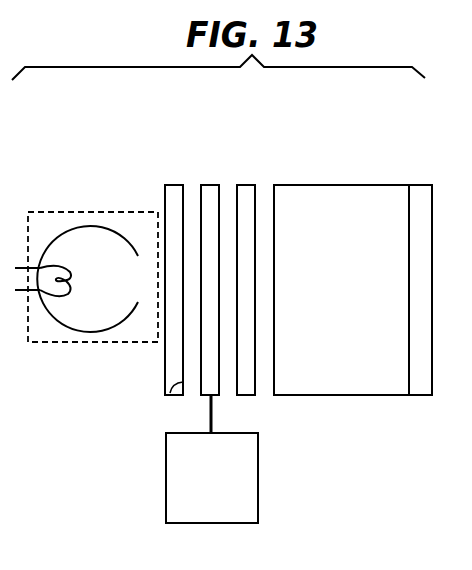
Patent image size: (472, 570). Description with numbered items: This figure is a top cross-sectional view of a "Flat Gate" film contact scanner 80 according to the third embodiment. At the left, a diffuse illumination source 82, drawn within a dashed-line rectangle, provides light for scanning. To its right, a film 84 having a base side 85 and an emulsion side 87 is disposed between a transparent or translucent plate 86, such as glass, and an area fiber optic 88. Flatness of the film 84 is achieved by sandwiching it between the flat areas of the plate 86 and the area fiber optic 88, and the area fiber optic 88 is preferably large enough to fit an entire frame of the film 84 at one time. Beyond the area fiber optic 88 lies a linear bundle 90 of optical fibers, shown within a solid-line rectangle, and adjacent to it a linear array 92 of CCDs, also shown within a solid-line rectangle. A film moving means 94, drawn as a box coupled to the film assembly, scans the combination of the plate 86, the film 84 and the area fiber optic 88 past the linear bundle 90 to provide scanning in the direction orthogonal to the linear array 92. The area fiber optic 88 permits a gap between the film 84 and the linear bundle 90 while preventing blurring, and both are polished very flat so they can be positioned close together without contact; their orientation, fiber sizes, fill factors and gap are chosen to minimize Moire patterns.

The flat gate film contact scanner 80 is at (315, 101).
The diffuse illumination source 82 is at (97, 212).
The film 84 is at (210, 185).
The base side 85 is at (200, 193).
The transparent or translucent plate 86 is at (168, 395).
The emulsion side 87 is at (221, 192).
The area fiber optic 88 is at (247, 388).
The linear bundle of optical fibers 90 is at (327, 197).
The linear array of CCDs 92 is at (419, 193).
The film moving means 94 is at (166, 483).